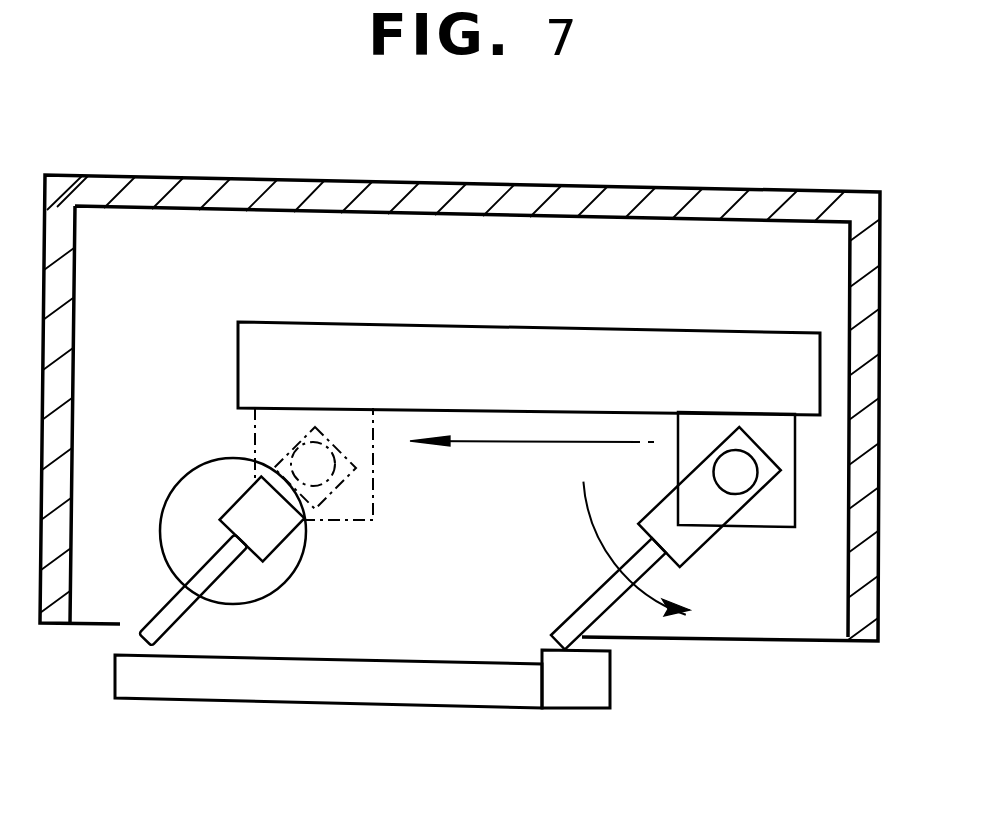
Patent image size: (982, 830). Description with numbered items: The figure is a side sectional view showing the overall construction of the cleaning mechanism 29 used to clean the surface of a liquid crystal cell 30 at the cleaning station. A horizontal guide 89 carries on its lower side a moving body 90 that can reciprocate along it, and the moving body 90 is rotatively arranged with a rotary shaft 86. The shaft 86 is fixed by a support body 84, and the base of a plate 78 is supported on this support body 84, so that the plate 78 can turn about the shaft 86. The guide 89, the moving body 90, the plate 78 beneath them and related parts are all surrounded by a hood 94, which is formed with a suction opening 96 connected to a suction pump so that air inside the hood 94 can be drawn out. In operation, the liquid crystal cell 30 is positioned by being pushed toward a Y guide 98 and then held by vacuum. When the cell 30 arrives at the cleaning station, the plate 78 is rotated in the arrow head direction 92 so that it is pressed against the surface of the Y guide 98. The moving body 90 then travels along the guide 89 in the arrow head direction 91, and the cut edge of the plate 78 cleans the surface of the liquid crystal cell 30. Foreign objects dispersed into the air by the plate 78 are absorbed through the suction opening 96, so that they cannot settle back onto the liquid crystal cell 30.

The cleaning mechanism 29 is at (432, 170).
The hood 94 is at (643, 192).
The horizontal guide 89 is at (618, 328).
The moving body 90 is at (782, 530).
The support body 84 is at (627, 458).
The plate 78 is at (567, 618).
The rotary shaft 86 is at (737, 467).
The arrow head direction 92 is at (583, 484).
The arrow head direction 91 is at (502, 443).
The suction opening 96 is at (185, 495).
The liquid crystal cell 30 is at (368, 657).
The Y guide 98 is at (600, 689).